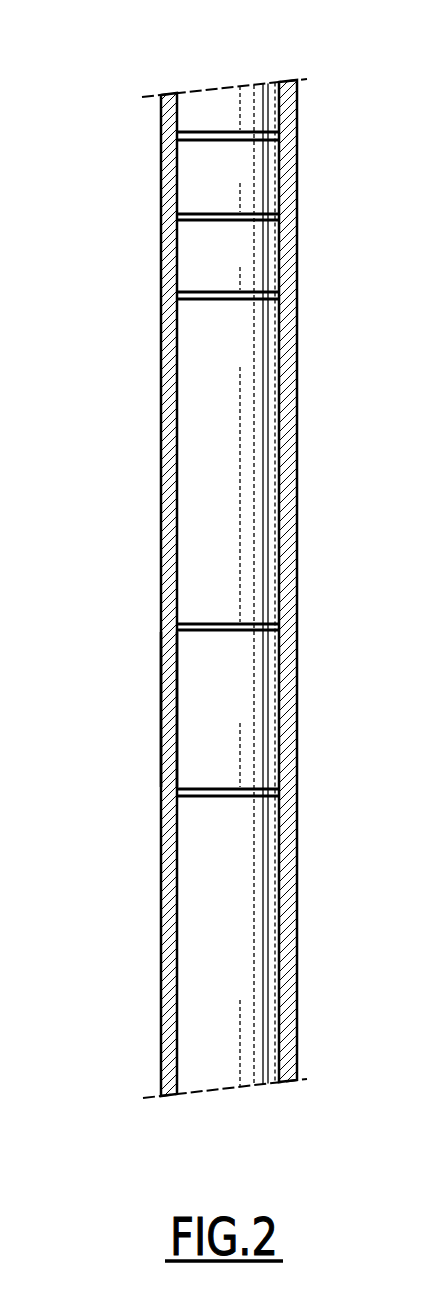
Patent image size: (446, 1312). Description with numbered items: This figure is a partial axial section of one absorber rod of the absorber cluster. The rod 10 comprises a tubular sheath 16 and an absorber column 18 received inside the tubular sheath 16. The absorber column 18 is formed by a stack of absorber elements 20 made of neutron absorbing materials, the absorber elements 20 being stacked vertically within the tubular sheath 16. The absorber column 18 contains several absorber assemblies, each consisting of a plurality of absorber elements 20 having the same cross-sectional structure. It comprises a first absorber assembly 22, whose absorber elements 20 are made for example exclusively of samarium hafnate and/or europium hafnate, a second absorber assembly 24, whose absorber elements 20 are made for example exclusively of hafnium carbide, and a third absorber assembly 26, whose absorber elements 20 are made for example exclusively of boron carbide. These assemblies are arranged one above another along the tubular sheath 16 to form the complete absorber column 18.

The blade assembly 10 is at (340, 60).
The tubular sheath 16 is at (298, 211).
The absorber column 18 is at (282, 406).
The absorber element 20 is at (245, 115).
The first absorber assembly 22 is at (130, 458).
The second absorber assembly 24 is at (130, 718).
The third absorber assembly 26 is at (165, 123).